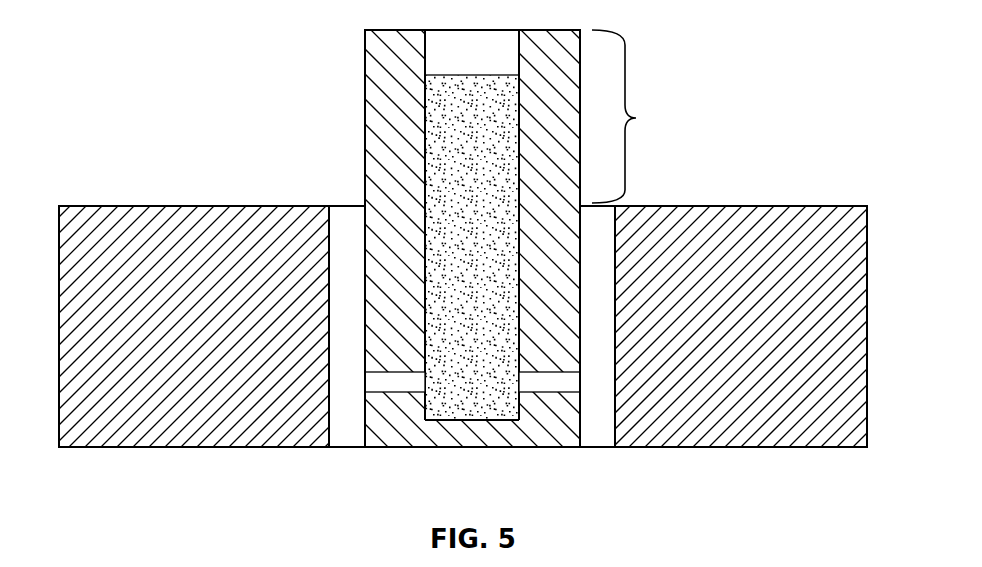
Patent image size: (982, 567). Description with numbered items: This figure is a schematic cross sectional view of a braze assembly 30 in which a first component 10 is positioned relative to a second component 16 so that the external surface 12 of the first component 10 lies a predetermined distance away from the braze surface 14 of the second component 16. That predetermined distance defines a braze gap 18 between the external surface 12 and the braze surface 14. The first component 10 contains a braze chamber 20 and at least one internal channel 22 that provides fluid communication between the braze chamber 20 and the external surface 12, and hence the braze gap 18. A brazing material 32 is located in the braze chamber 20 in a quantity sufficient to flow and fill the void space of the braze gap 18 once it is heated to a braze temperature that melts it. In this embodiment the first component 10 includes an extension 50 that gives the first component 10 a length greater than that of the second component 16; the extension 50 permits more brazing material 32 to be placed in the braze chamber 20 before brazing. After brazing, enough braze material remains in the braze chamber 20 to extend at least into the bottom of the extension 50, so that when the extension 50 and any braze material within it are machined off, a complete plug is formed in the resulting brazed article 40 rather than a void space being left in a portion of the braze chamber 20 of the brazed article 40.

The first component 10 is at (381, 220).
The external surface 12 is at (364, 427).
The braze surface 14 is at (330, 427).
The second component 16 is at (173, 329).
The braze gap 18 is at (348, 217).
The braze chamber 20 is at (458, 58).
The internal channel 22 is at (378, 382).
The braze assembly 30 is at (884, 166).
The brazing material 32 is at (458, 277).
The brazed article 40 is at (935, 566).
The extension 50 is at (636, 118).